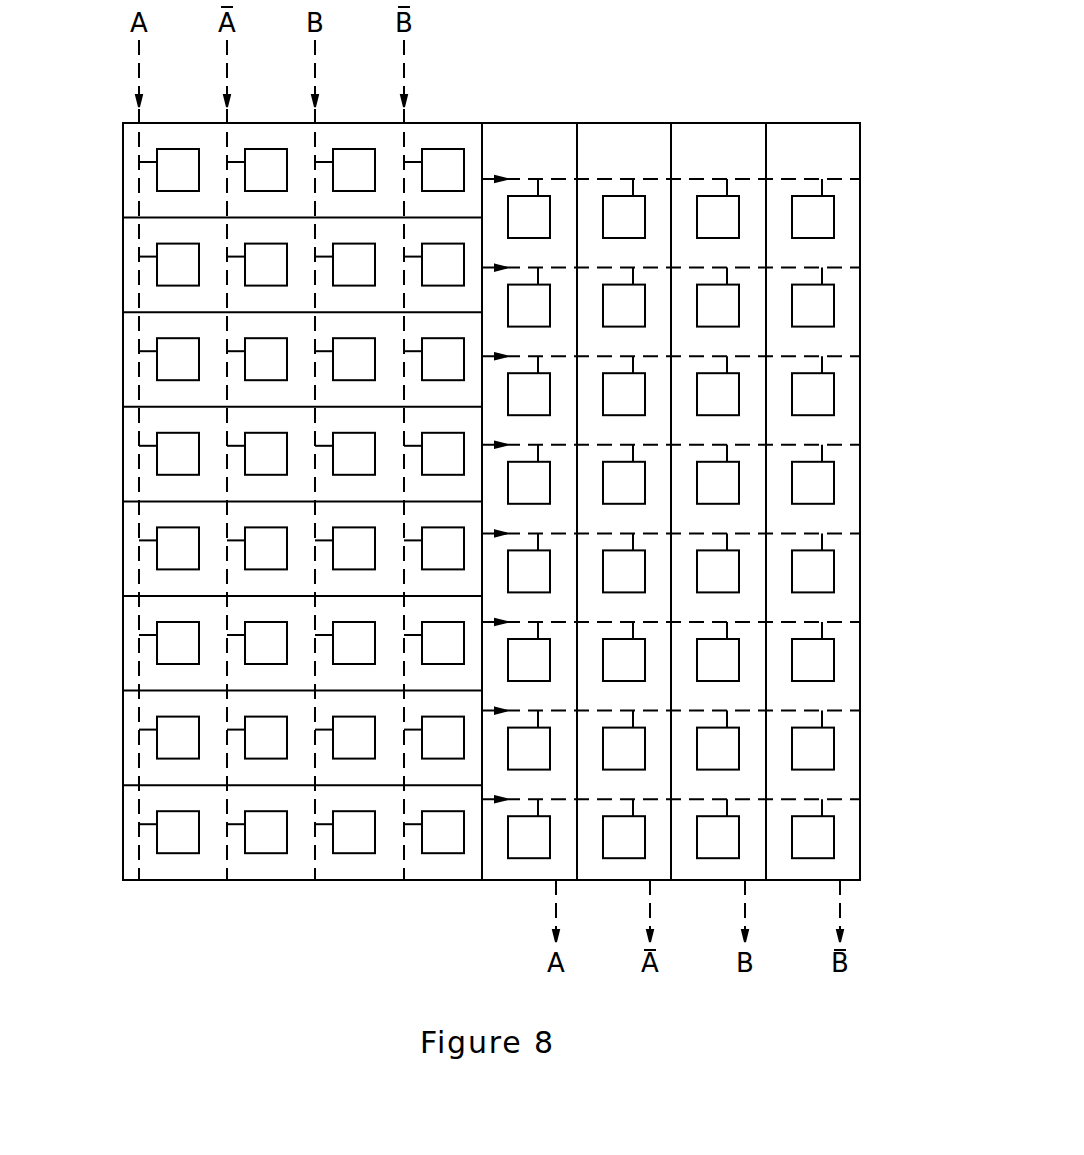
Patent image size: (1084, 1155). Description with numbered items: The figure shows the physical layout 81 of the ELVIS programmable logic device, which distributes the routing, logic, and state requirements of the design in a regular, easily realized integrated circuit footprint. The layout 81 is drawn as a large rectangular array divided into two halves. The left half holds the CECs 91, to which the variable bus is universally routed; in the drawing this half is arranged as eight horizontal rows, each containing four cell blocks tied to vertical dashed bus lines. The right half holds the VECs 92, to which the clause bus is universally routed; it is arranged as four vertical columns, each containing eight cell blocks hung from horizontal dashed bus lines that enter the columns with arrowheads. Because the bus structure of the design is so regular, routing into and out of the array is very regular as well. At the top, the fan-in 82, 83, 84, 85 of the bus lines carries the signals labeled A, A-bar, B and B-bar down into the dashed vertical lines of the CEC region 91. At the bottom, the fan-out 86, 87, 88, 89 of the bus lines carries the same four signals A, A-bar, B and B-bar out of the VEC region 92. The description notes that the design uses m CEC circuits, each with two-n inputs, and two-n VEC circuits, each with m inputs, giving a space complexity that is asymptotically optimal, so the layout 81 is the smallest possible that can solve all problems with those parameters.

The physical layout 81 is at (860, 680).
The fan-in 82 is at (139, 78).
The fan-in 83 is at (227, 78).
The fan-in 84 is at (315, 78).
The fan-in 85 is at (404, 78).
The fan-out 86 is at (553, 915).
The fan-out 87 is at (647, 915).
The fan-out 88 is at (742, 915).
The fan-out 89 is at (837, 915).
The CECs 91 is at (98, 455).
The VECs 92 is at (660, 93).